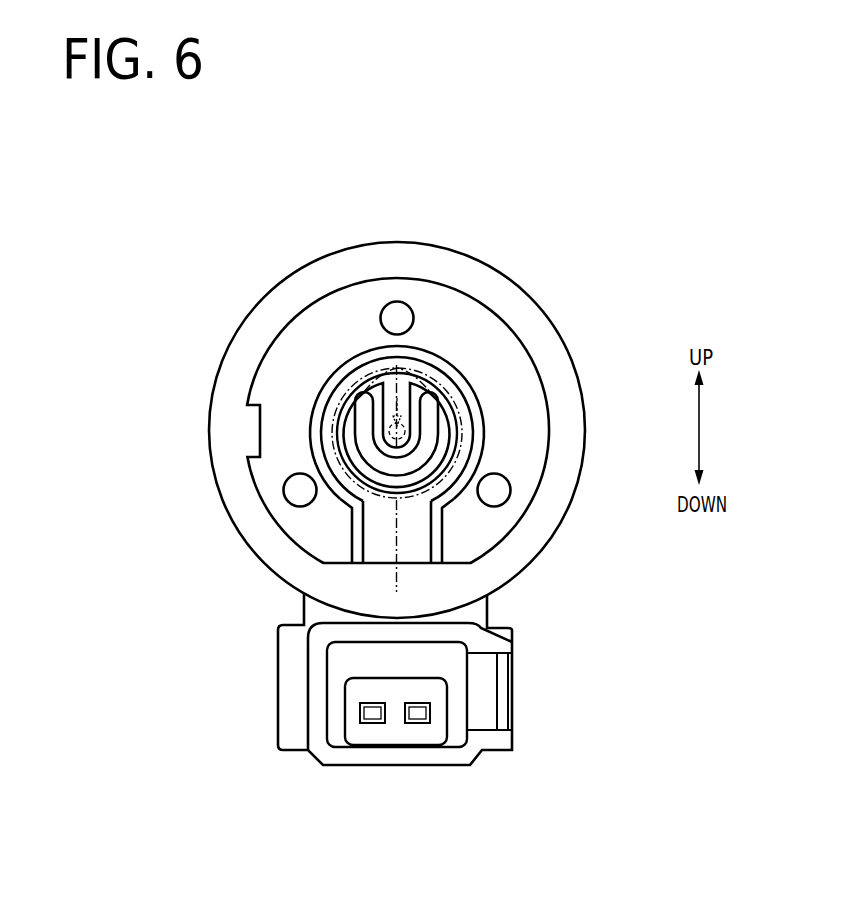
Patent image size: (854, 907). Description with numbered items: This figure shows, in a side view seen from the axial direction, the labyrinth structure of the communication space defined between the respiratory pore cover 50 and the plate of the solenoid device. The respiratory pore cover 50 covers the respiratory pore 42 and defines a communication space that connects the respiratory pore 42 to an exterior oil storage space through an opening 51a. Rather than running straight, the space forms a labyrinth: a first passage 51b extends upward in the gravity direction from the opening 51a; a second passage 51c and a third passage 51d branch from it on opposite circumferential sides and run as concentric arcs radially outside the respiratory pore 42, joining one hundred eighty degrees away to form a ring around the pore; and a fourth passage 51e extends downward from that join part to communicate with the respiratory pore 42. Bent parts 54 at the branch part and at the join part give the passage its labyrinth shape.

The respiratory pore 42 is at (446, 360).
The respiratory pore cover 50 is at (530, 400).
The opening 51a is at (380, 563).
The first passage 51b is at (413, 540).
The second passage 51c is at (473, 383).
The third passage 51d is at (313, 397).
The fourth passage 51e is at (355, 355).
The bent part 54 is at (383, 381).